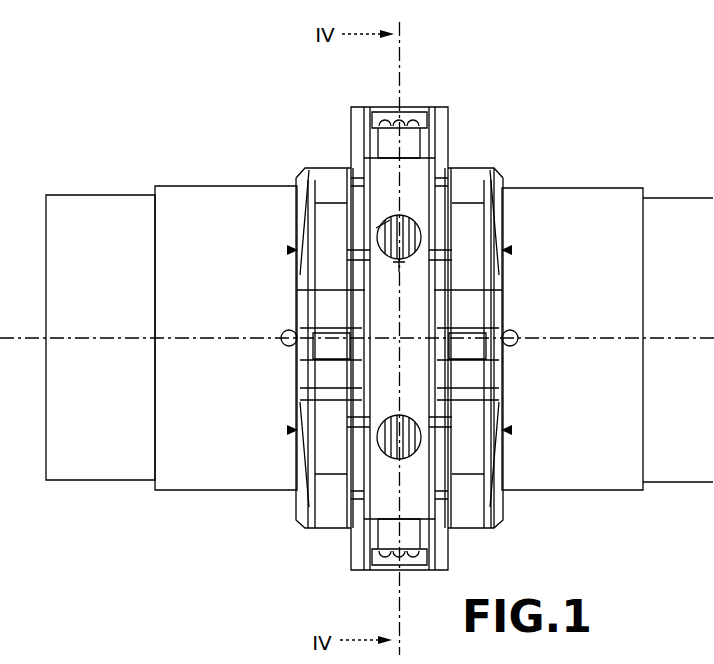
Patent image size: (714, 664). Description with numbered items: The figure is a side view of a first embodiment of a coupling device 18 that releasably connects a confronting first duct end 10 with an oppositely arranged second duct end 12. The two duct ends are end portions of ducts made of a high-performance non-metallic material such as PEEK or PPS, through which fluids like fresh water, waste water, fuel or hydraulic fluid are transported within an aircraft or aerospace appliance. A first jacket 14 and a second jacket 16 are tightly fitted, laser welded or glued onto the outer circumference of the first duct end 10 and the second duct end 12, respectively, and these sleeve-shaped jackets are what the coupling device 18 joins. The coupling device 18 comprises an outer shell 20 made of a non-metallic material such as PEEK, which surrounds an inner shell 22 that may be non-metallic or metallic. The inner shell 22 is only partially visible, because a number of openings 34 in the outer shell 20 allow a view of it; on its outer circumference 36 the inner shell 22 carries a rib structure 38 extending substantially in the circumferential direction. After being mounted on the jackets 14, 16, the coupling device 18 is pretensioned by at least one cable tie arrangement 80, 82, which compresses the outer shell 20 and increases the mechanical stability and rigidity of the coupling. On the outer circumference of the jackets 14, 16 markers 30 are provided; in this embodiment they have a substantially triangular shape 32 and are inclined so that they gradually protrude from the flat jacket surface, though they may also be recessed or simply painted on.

The first duct end 10 is at (96, 205).
The second duct end 12 is at (690, 207).
The first jacket 14 is at (222, 195).
The second jacket 16 is at (555, 197).
The coupling device 18 is at (600, 126).
The outer shell 20 is at (495, 506).
The inner shell 22 is at (431, 212).
The markers 30 is at (268, 205).
The triangular shape 32 is at (288, 250).
The openings 34 is at (392, 258).
The outer circumference 36 is at (405, 264).
The rib structure 38 is at (422, 228).
The cable tie arrangement 80 is at (330, 158).
The cable tie arrangement 82 is at (452, 112).